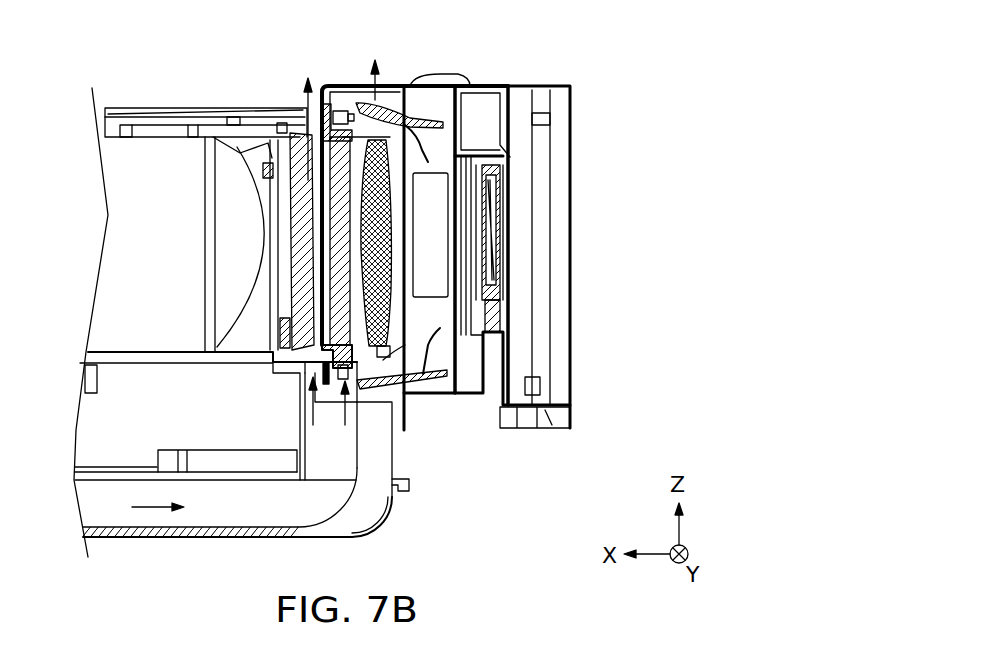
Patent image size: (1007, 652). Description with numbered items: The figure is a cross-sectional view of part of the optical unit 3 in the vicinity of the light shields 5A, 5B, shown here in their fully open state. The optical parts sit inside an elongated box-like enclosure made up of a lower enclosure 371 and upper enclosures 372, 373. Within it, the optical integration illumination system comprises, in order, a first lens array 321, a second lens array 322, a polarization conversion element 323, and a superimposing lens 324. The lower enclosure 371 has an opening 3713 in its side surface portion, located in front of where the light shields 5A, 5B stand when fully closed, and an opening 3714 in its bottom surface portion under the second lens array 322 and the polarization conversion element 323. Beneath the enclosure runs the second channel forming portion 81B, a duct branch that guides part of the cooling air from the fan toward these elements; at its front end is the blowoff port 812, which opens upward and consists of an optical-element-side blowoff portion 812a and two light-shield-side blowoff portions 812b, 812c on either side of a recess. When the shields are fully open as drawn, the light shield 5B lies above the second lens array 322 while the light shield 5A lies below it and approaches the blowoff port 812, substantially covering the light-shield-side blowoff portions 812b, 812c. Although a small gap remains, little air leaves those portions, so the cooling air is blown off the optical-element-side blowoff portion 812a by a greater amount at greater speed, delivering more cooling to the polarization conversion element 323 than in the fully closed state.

The optical unit 3 is at (562, 47).
The upper enclosure 373 is at (342, 85).
The second lens array 322 is at (397, 138).
The light shield 5B is at (410, 148).
The light shield 5A is at (397, 398).
The upper enclosure 372 is at (218, 118).
The superimposing lens 324 is at (300, 163).
The polarization conversion element 323 is at (322, 280).
The opening 3713 is at (446, 237).
The first lens array 321 is at (500, 322).
The lower enclosure 371 is at (105, 368).
The opening 3714 is at (312, 372).
The blowoff port 812 is at (560, 465).
The optical-element-side blowoff portion 812a is at (343, 450).
The light-shield-side blowoff portion 812b is at (455, 449).
The light-shield-side blowoff portion 812c is at (373, 440).
The second channel forming portion 81B is at (151, 538).